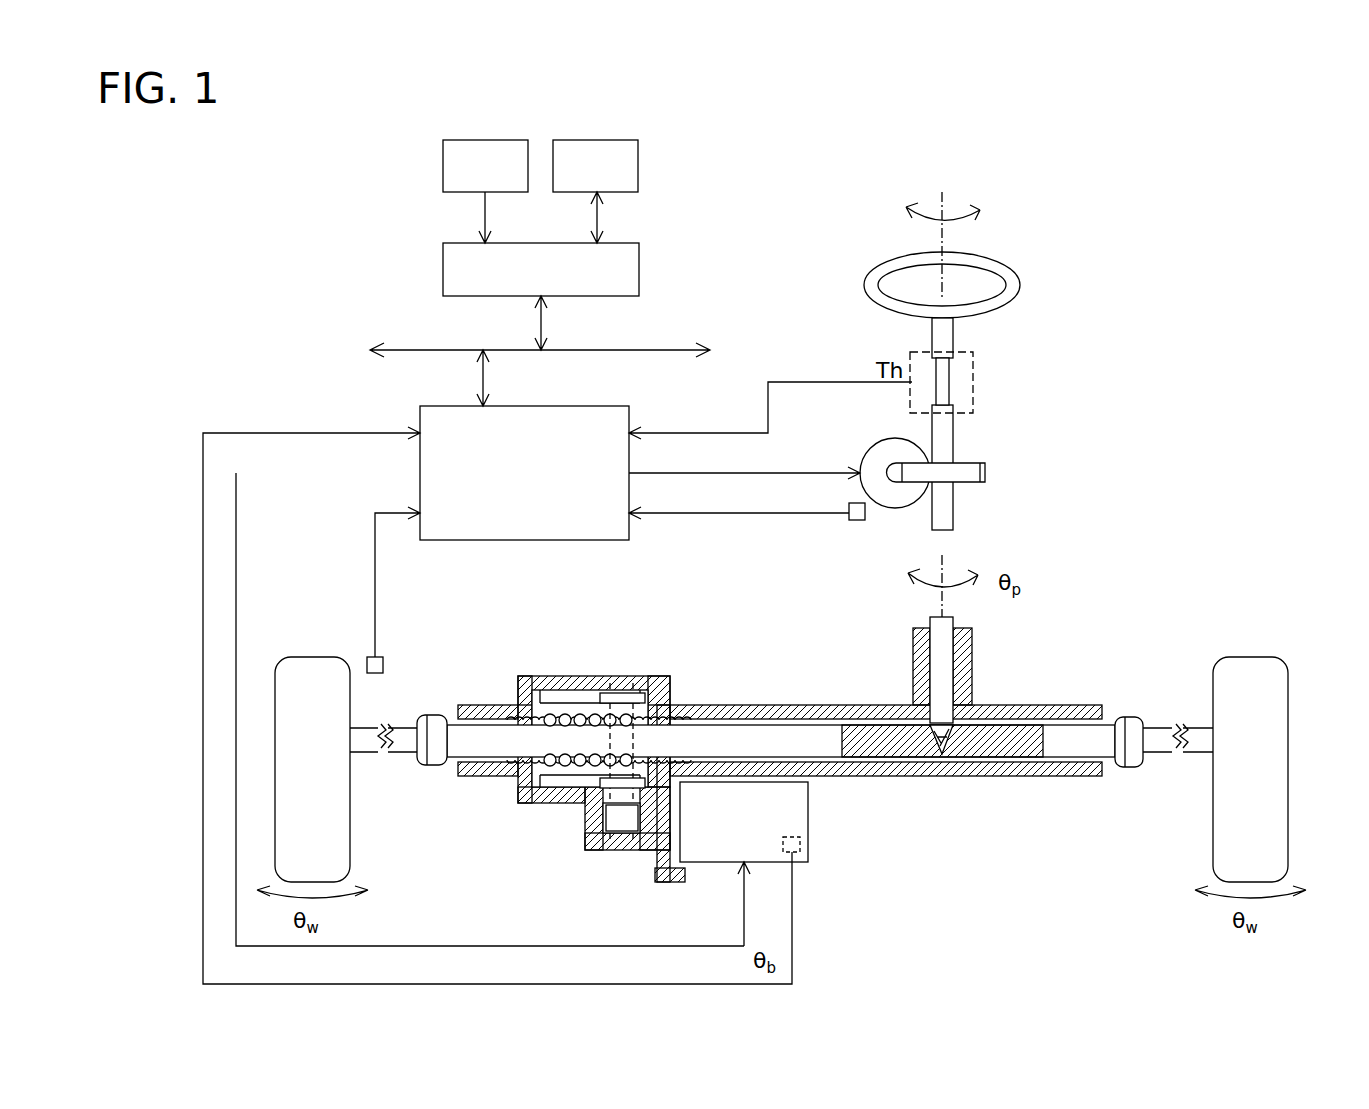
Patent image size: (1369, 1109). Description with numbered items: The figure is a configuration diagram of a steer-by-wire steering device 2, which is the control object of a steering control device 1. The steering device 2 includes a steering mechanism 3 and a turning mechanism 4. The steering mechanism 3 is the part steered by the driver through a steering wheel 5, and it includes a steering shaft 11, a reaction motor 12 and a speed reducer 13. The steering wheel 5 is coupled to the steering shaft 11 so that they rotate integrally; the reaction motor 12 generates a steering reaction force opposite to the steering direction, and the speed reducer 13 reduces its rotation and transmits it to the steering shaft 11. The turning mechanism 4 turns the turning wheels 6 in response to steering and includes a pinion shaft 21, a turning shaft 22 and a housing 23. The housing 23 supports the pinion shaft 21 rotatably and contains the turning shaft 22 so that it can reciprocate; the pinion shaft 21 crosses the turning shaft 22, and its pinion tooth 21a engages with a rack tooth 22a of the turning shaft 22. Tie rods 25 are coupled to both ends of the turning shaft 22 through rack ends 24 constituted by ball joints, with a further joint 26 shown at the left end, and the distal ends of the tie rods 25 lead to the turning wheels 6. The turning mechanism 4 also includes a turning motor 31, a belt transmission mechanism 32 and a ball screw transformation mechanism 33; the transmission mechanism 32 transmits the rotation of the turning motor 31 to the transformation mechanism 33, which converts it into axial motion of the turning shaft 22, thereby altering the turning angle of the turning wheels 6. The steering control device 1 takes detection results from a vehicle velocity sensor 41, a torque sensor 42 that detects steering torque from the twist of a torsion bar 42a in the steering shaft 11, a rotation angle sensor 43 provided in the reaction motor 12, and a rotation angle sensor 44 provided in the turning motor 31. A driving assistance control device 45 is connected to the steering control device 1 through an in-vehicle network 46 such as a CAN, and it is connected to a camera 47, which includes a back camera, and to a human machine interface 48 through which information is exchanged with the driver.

The steering control device 1 is at (585, 407).
The steer-by-wire steering device 2 is at (1112, 462).
The steering mechanism 3 is at (1030, 450).
The turning mechanism 4 is at (1032, 609).
The steering wheel 5 is at (990, 262).
The turning wheels 6 is at (306, 656).
The steering shaft 11 is at (955, 432).
The reaction motor 12 is at (886, 438).
The speed reducer 13 is at (910, 503).
The pinion shaft 21 is at (958, 652).
The pinion tooth 21a is at (942, 760).
The turning shaft 22 is at (714, 706).
The rack tooth 22a is at (898, 756).
The housing 23 is at (782, 705).
The rack ends 24 is at (1128, 717).
The tie rods 25 is at (370, 756).
The ball joint 26 is at (425, 768).
The turning motor 31 is at (810, 812).
The transmission mechanism 32 is at (606, 842).
The transformation mechanism 33 is at (547, 798).
The vehicle velocity sensor 41 is at (384, 665).
The torque sensor 42 is at (973, 358).
The torsion bar 42a is at (950, 390).
The rotation angle sensor 43 is at (857, 522).
The rotation angle sensor 44 is at (802, 845).
The driving assistance control device 45 is at (639, 270).
The in-vehicle network 46 is at (660, 348).
The camera 47 is at (443, 166).
The human machine interface (HMI) 48 is at (638, 165).